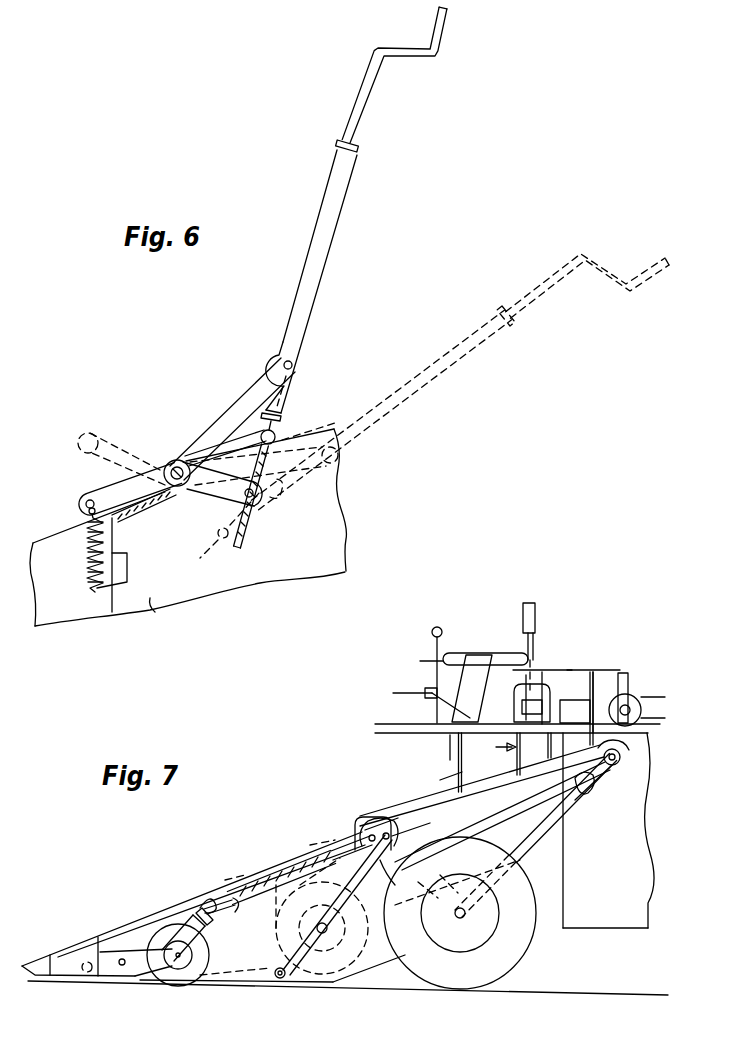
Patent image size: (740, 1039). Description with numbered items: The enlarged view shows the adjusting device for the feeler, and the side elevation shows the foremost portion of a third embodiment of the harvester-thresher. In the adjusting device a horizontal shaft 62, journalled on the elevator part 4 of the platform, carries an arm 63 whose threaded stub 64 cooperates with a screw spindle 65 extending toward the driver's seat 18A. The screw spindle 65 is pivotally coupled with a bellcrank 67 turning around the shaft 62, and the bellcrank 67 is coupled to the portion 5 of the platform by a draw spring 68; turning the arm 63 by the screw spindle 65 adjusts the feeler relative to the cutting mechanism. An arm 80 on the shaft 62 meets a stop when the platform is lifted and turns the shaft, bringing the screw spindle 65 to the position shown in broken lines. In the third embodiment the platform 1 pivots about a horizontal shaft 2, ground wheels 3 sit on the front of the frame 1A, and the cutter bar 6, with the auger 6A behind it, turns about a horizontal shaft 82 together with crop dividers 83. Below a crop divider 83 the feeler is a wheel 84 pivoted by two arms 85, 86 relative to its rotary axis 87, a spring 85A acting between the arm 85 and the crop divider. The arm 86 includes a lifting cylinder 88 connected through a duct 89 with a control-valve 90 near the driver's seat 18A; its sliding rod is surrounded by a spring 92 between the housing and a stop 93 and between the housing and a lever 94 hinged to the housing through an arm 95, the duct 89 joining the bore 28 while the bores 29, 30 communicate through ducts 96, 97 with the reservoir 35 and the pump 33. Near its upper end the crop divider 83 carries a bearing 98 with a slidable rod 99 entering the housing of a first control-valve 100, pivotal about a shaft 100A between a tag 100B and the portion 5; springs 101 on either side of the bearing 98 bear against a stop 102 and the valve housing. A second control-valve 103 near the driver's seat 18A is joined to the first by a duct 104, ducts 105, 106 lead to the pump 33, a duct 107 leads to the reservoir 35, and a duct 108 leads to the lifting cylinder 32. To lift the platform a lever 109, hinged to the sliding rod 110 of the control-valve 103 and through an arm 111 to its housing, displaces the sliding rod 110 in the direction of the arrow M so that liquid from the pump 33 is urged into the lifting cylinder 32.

In FIG. 6, the screw spindle 65 is at (340, 206).
In FIG. 6, the bellcrank 67 is at (262, 372).
In FIG. 6, the horizontal shaft 62 is at (181, 457).
In FIG. 6, the arm 80 is at (280, 438).
In FIG. 6, the threaded stub 64 is at (256, 508).
In FIG. 6, the arm 63 is at (208, 502).
In FIG. 6, the portion of the platform 5 is at (50, 545).
In FIG. 6, the draw spring 68 is at (95, 581).
In FIG. 6, the elevator part 4 is at (152, 602).
In FIG. 7, the elevator part 4 is at (536, 836).
In FIG. 7, the platform 1 is at (333, 986).
In FIG. 7, the frame 1A is at (643, 830).
In FIG. 7, the horizontal shaft 2 is at (615, 766).
In FIG. 7, the ground wheels 3 is at (524, 937).
In FIG. 7, the lifting cylinder 32 is at (457, 874).
In FIG. 7, the bore 28 is at (560, 668).
In FIG. 7, the bore 29 is at (472, 654).
In FIG. 7, the bore 30 is at (495, 678).
In FIG. 7, the pump 33 is at (637, 700).
In FIG. 7, the reservoir 35 is at (620, 648).
In FIG. 7, the cutter bar 6 is at (258, 988).
In FIG. 7, the auger 6A is at (319, 905).
In FIG. 7, the horizontal shaft 82 is at (281, 980).
In FIG. 7, the crop divider 83 is at (165, 909).
In FIG. 7, the wheel 84 is at (172, 988).
In FIG. 7, the arm 85 is at (115, 984).
In FIG. 7, the spring 85A is at (128, 944).
In FIG. 7, the arm 86 is at (225, 985).
In FIG. 7, the rotary axis 87 is at (200, 984).
In FIG. 7, the lifting cylinder 88 is at (215, 890).
In FIG. 7, the duct 89 is at (435, 785).
In FIG. 7, the control-valve 90 is at (450, 654).
In FIG. 7, the spring 92 is at (412, 682).
In FIG. 7, the stop 93 is at (438, 750).
In FIG. 7, the lever 94 is at (436, 626).
In FIG. 7, the arm 95 is at (429, 703).
In FIG. 7, the duct 96 is at (540, 670).
In FIG. 7, the duct 97 is at (618, 683).
In FIG. 7, the bearing 98 is at (329, 845).
In FIG. 7, the slidable rod 99 is at (358, 817).
In FIG. 7, the control-valve 100 is at (397, 885).
In FIG. 7, the shaft 100A is at (415, 823).
In FIG. 7, the tag 100B is at (378, 795).
In FIG. 7, the spring 101 is at (340, 848).
In FIG. 7, the stop 102 is at (280, 877).
In FIG. 7, the second control-valve 103 is at (570, 675).
In FIG. 7, the duct 104 is at (502, 816).
In FIG. 7, the duct 105 is at (593, 797).
In FIG. 7, the duct 106 is at (625, 689).
In FIG. 7, the duct 107 is at (571, 782).
In FIG. 7, the duct 108 is at (488, 785).
In FIG. 7, the lever 109 is at (510, 636).
In FIG. 7, the sliding rod 110 is at (475, 754).
In FIG. 7, the arm 111 is at (441, 771).
In FIG. 7, the driver's seat 18A is at (531, 601).
In FIG. 7, the arrow M is at (504, 756).